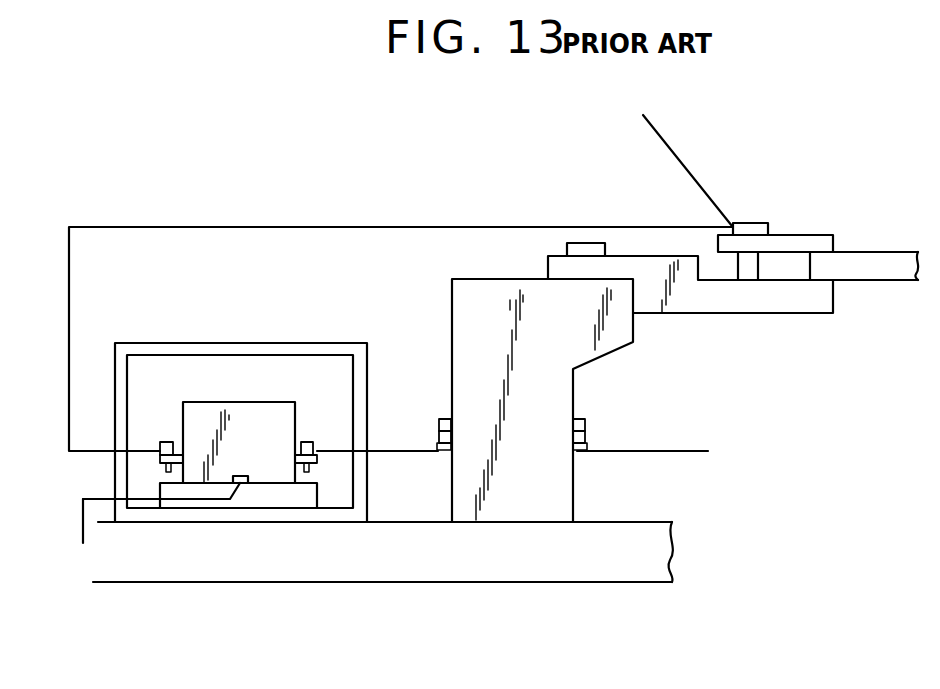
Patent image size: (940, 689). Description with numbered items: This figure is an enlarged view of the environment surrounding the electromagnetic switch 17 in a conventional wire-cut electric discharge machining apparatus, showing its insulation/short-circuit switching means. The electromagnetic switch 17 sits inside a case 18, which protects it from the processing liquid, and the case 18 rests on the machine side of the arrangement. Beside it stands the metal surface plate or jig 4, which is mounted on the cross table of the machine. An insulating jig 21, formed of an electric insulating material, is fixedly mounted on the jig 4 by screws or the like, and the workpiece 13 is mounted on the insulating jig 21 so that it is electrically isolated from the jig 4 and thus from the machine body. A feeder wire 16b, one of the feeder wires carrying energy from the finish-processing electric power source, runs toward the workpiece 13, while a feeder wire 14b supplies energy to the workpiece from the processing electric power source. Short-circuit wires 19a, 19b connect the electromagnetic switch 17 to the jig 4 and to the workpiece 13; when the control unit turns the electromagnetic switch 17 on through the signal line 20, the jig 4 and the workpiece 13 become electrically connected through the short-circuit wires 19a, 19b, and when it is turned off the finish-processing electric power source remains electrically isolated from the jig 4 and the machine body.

The jig 4 is at (535, 400).
The workpiece 13 is at (863, 263).
The feeder wire 14b is at (672, 451).
The feeder wire 16b is at (698, 180).
The electromagnetic switch 17 is at (242, 403).
The case 18 is at (270, 343).
The short-circuit wire 19a is at (393, 450).
The short-circuit wire 19b is at (223, 228).
The signal line 20 is at (83, 543).
The insulating jig 21 is at (810, 307).